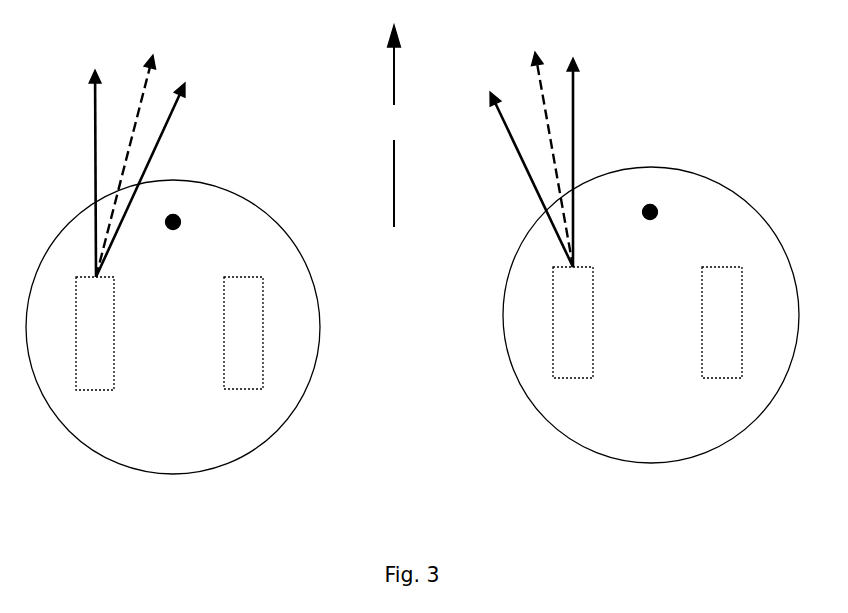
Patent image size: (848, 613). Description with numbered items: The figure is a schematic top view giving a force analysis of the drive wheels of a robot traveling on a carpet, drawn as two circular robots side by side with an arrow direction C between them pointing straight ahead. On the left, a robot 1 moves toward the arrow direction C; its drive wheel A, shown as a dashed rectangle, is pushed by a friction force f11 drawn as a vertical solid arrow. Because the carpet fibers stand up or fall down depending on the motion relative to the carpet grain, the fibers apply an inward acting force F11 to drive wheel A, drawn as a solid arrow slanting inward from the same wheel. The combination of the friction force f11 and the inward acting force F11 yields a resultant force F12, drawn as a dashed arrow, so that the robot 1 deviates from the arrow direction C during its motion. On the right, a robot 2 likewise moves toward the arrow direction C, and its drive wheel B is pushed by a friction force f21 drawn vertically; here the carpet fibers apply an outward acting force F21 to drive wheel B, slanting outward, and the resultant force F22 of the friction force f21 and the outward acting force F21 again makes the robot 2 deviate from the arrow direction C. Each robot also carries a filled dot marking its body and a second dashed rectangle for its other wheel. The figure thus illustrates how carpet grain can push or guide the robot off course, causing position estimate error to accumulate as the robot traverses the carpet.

The robot 1 is at (173, 327).
The robot 2 is at (651, 315).
The friction force f11 is at (84, 173).
The inward acting force F11 is at (150, 180).
The resultant force F12 is at (126, 166).
The friction force f21 is at (586, 162).
The outward acting force F21 is at (528, 179).
The resultant force F22 is at (541, 159).
The arrow direction C is at (394, 126).